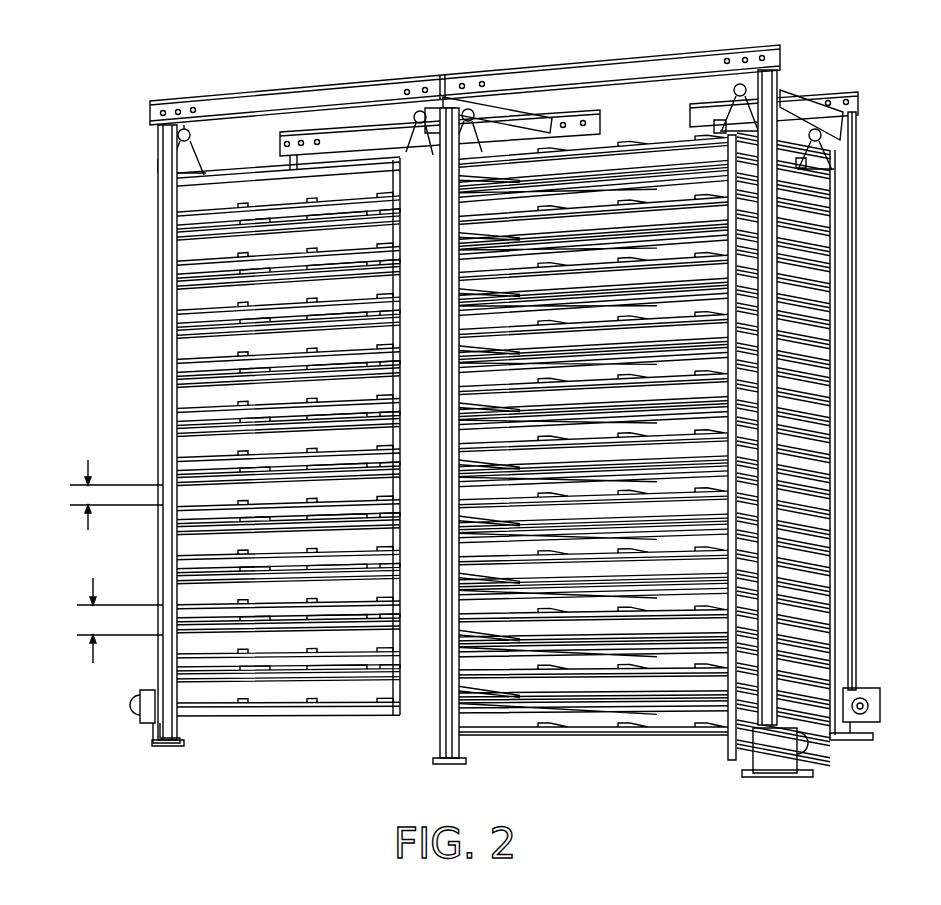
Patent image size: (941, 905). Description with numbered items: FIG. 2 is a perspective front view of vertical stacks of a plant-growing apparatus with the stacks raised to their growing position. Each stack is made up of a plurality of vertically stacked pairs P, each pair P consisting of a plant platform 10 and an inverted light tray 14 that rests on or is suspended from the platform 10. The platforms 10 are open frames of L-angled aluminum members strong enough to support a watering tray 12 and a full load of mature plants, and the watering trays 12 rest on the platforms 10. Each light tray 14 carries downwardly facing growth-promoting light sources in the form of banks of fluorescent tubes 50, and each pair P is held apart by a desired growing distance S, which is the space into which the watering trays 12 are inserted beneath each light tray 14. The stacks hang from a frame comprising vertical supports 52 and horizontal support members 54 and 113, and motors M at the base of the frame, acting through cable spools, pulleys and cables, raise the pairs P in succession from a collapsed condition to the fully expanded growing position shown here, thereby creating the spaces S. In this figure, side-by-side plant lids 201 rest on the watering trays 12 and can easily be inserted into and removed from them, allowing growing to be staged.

The plant platform 10 is at (176, 265).
The watering tray 12 is at (214, 663).
The inverted light tray 14 is at (176, 250).
The fluorescent tubes 50 is at (176, 235).
The vertical supports 52 is at (158, 158).
The horizontal support members 54 is at (287, 106).
The horizontal support member 113 is at (507, 106).
The plant lids 201 is at (351, 710).
The growing distance S is at (106, 495).
The pair of platform and light tray P is at (114, 620).
The motor M is at (150, 726).